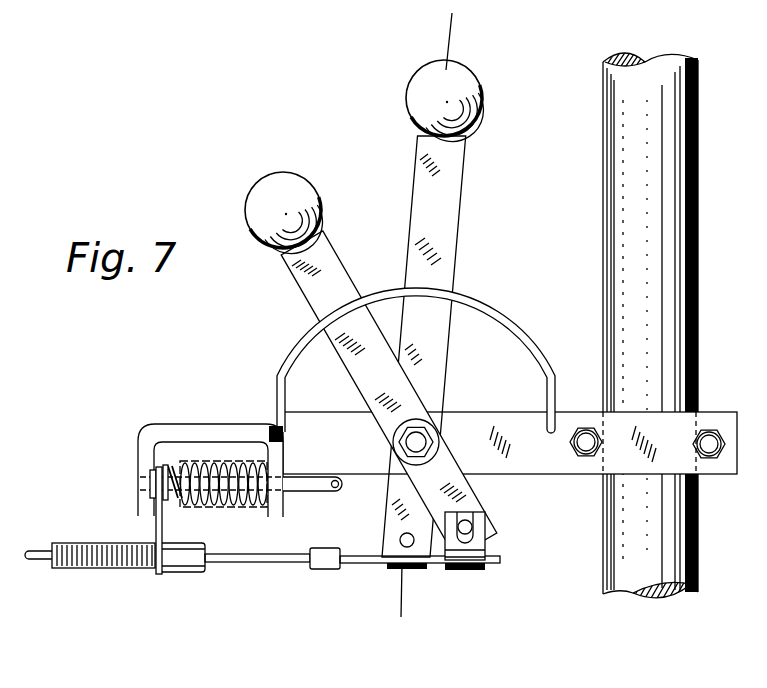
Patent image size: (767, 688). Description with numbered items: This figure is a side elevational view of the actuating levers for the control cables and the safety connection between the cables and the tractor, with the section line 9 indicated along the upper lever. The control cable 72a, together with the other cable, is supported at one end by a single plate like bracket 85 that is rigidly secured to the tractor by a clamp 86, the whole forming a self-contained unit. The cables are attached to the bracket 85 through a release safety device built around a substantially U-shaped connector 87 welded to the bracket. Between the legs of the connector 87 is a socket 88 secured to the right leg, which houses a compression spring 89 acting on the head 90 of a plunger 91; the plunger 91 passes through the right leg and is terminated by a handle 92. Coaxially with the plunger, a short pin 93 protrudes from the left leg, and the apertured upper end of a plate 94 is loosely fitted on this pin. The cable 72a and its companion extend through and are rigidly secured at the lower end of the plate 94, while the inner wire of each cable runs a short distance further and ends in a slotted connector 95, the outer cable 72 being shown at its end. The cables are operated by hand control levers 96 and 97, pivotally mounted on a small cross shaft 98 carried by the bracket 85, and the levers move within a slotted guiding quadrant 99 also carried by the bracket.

The section line 9- 9 is at (457, 25).
The control cable 72 is at (40, 557).
The control cable 72a is at (92, 568).
The plate like bracket 85 is at (551, 462).
The clamp 86 is at (586, 441).
The U-shaped connector 87 is at (232, 432).
The socket 88 is at (233, 508).
The compression spring 89 is at (176, 475).
The head 90 is at (165, 465).
The plunger 91 is at (312, 490).
The handle 92 is at (338, 488).
The short pin 93 is at (163, 480).
The plate 94 is at (158, 575).
The slotted connector 95 is at (467, 574).
The hand control lever 96 is at (325, 250).
The hand control lever 97 is at (422, 182).
The cross shaft 98 is at (431, 434).
The slotted guiding quadrant 99 is at (492, 310).